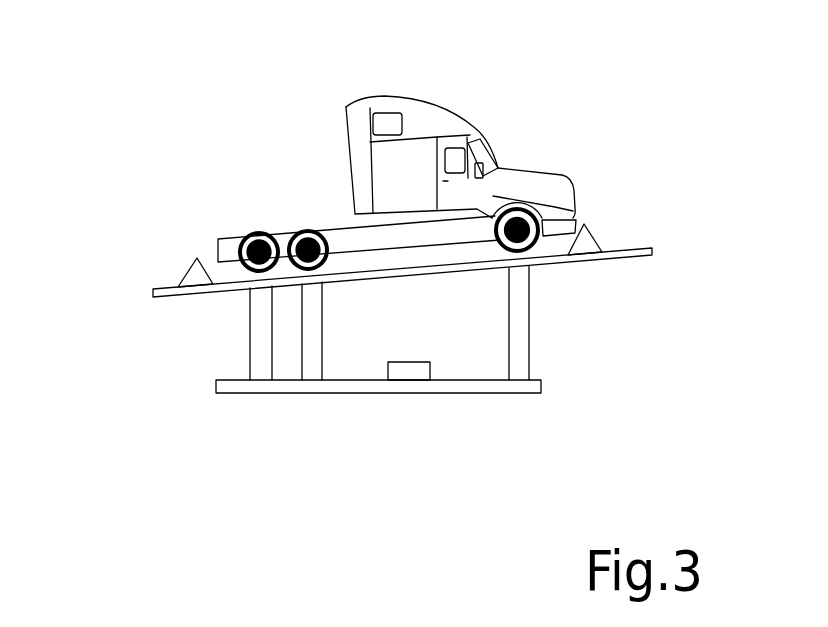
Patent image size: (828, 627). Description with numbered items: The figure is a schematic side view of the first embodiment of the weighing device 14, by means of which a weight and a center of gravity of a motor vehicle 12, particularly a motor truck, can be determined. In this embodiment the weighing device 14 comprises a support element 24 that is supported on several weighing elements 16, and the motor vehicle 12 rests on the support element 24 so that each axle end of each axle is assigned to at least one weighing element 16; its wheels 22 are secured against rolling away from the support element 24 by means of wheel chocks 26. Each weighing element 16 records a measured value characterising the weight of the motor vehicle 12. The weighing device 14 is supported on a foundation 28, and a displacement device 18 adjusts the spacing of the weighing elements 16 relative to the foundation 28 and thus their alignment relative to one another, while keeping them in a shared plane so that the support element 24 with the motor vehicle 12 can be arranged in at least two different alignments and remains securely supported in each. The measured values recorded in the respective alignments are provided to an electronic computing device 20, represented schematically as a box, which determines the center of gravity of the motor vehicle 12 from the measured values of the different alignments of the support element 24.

The motor vehicle 12 is at (412, 110).
The weighing device 14 is at (352, 405).
The weighing elements 16 is at (250, 292).
The displacement device 18 is at (537, 356).
The electronic computing device 20 is at (409, 372).
The wheels 22 is at (260, 240).
The support element 24 is at (153, 293).
The wheel chocks 26 is at (187, 273).
The foundation 28 is at (482, 388).